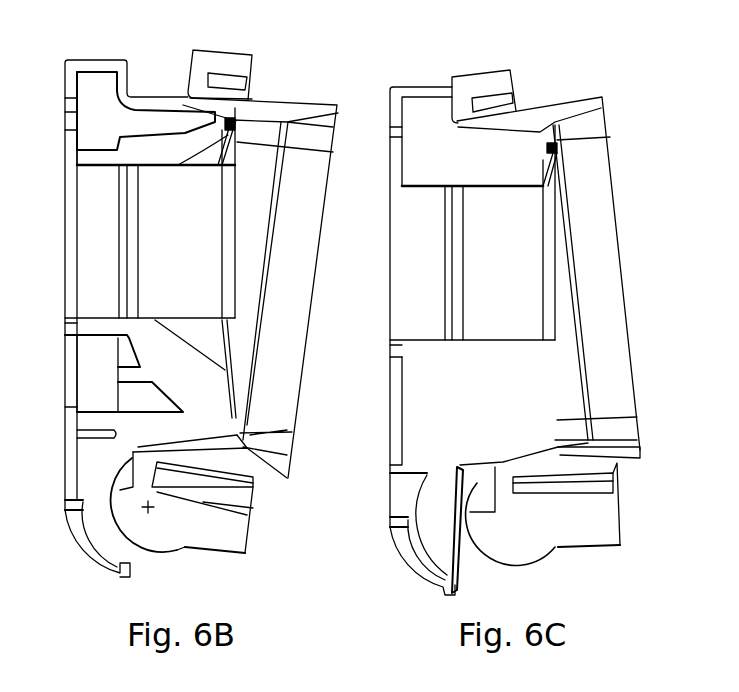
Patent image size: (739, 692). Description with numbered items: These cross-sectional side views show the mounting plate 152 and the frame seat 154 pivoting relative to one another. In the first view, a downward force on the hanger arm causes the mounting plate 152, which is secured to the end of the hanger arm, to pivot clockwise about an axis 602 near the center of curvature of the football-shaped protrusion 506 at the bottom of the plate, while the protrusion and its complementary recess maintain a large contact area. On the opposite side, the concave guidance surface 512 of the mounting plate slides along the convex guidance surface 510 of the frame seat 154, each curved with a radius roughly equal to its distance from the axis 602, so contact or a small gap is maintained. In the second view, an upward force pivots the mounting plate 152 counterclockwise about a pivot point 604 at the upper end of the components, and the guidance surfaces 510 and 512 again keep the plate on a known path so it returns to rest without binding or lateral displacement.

In FIG. 6B, the mounting plate 152 is at (276, 98).
In FIG. 6C, the mounting plate 152 is at (552, 98).
In FIG. 6B, the frame seat 154 is at (97, 58).
In FIG. 6C, the frame seat 154 is at (410, 85).
In FIG. 6B, the football-shaped protrusion 506 is at (158, 562).
In FIG. 6B, the guidance surface 510 is at (161, 97).
In FIG. 6C, the guidance surface 510 is at (457, 472).
In FIG. 6B, the guidance surface 512 is at (258, 110).
In FIG. 6C, the guidance surface 512 is at (570, 447).
In FIG. 6B, the axis 602 is at (147, 508).
In FIG. 6C, the pivot point 604 is at (449, 81).